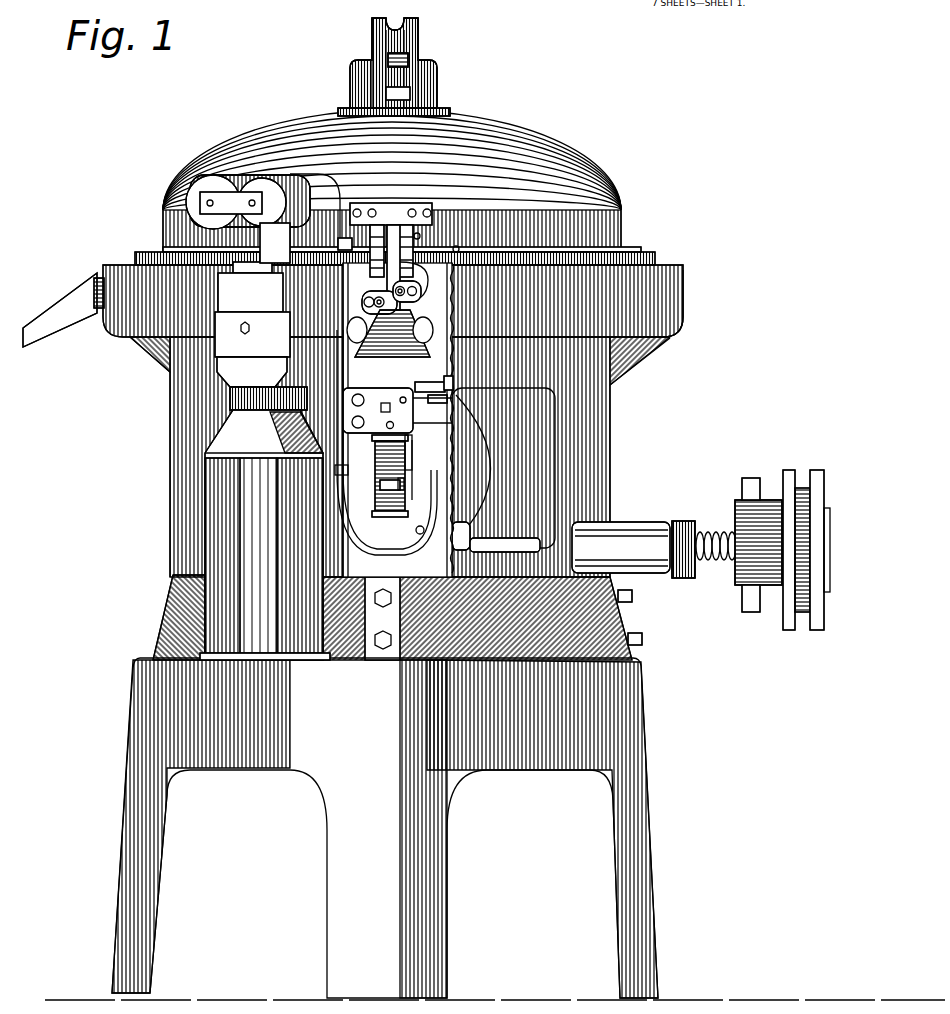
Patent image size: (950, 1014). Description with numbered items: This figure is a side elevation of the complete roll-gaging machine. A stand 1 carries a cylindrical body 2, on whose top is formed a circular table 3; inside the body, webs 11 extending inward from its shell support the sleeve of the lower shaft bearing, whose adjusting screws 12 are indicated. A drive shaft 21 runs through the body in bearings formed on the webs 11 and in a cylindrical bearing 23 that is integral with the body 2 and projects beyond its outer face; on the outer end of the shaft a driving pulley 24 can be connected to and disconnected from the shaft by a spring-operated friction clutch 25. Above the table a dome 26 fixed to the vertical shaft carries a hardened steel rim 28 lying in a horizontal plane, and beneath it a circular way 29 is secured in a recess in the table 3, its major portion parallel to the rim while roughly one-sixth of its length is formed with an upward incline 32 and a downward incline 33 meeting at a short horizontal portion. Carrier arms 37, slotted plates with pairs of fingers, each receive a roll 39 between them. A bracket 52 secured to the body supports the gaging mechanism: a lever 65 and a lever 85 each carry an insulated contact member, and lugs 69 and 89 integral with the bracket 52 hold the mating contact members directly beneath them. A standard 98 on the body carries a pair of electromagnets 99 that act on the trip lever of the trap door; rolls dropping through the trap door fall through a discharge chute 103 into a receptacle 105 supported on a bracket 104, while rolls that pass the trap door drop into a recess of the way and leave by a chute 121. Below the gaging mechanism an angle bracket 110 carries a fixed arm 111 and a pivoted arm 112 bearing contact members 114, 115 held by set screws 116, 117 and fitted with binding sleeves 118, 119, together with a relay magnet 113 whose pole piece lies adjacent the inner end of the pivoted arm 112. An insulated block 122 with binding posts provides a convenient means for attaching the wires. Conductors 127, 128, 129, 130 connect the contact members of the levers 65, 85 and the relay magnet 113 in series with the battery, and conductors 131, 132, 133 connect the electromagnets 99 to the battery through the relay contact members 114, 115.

The stand 1 is at (385, 828).
The cylindrical body 2 is at (190, 505).
The circular table 3 is at (683, 298).
The webs 11 is at (527, 489).
The adjusting screws 12 is at (396, 46).
The drive shaft 21 is at (500, 531).
The cylindrical bearing 23 is at (643, 554).
The driving pulley 24 is at (800, 482).
The spring-operated friction clutch 25 is at (768, 546).
The dome 26 is at (523, 177).
The hardened steel rim 28 is at (537, 240).
The circular way 29 is at (652, 271).
The upward incline 32 is at (458, 246).
The downward incline 33 is at (345, 238).
The carrier arms 37 is at (604, 244).
The roll 39 is at (628, 262).
The bracket 52 is at (290, 331).
The lever 65 is at (305, 289).
The lug 69 is at (370, 237).
The lever 85 is at (416, 235).
The lug 89 is at (419, 233).
The standard 98 is at (270, 241).
The electromagnets 99 is at (262, 217).
The discharge chute 103 is at (256, 368).
The bracket 104 is at (366, 662).
The receptacle 105 is at (302, 602).
The angle bracket 110 is at (378, 400).
The fixed arm 111 is at (399, 441).
The pivoted arm 112 is at (447, 389).
The relay magnet 113 is at (378, 491).
The contact member 114 is at (400, 460).
The contact member 115 is at (453, 384).
The set screw 116 is at (452, 426).
The set screw 117 is at (452, 405).
The binding sleeve 118 is at (401, 480).
The binding sleeve 119 is at (440, 381).
The chute 121 is at (52, 338).
The insulated block 122 is at (392, 205).
The conductor 127 is at (408, 203).
The conductor 128 is at (421, 534).
The conductor 129 is at (343, 473).
The conductor 130 is at (381, 201).
The conductor 131 is at (463, 309).
The conductor 132 is at (357, 542).
The conductor 133 is at (318, 174).